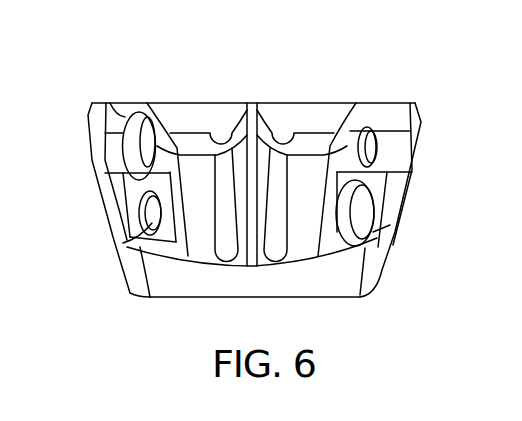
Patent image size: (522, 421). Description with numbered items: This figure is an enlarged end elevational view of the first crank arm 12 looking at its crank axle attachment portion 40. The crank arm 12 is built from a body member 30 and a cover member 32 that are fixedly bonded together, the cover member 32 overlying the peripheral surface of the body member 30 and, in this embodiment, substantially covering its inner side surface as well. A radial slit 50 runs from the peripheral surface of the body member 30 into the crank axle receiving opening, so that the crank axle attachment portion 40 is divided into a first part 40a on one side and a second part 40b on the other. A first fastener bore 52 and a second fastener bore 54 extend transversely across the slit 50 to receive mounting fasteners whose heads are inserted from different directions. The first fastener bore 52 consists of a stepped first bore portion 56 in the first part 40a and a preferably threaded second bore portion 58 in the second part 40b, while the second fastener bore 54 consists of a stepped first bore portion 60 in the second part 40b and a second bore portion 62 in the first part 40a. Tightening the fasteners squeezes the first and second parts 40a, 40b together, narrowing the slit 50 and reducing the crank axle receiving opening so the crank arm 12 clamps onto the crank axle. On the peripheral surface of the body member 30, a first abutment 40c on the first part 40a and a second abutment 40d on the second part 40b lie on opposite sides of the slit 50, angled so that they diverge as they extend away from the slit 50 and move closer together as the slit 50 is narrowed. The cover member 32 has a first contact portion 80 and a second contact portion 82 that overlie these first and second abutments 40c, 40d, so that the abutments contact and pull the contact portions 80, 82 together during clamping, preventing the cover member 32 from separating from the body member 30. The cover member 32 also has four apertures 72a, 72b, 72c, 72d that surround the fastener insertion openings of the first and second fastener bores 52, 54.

The first crank arm 12 is at (446, 93).
The body member 30 is at (329, 88).
The cover member 32 is at (315, 310).
The crank axle attachment portion 40 is at (260, 150).
The first part 40a is at (167, 108).
The second part 40b is at (340, 103).
The first abutment 40c is at (200, 122).
The second abutment 40d is at (312, 110).
The slit 50 is at (256, 84).
The first fastener bore 52 is at (121, 143).
The second fastener bore 54 is at (376, 220).
The first bore portion 56 is at (137, 157).
The second bore portion 58 is at (369, 138).
The first bore portion 60 is at (347, 203).
The second bore portion 62 is at (160, 207).
The aperture 72a is at (113, 107).
The aperture 72b is at (125, 242).
The aperture 72c is at (378, 156).
The aperture 72d is at (363, 243).
The first contact portion 80 is at (226, 110).
The second contact portion 82 is at (285, 112).